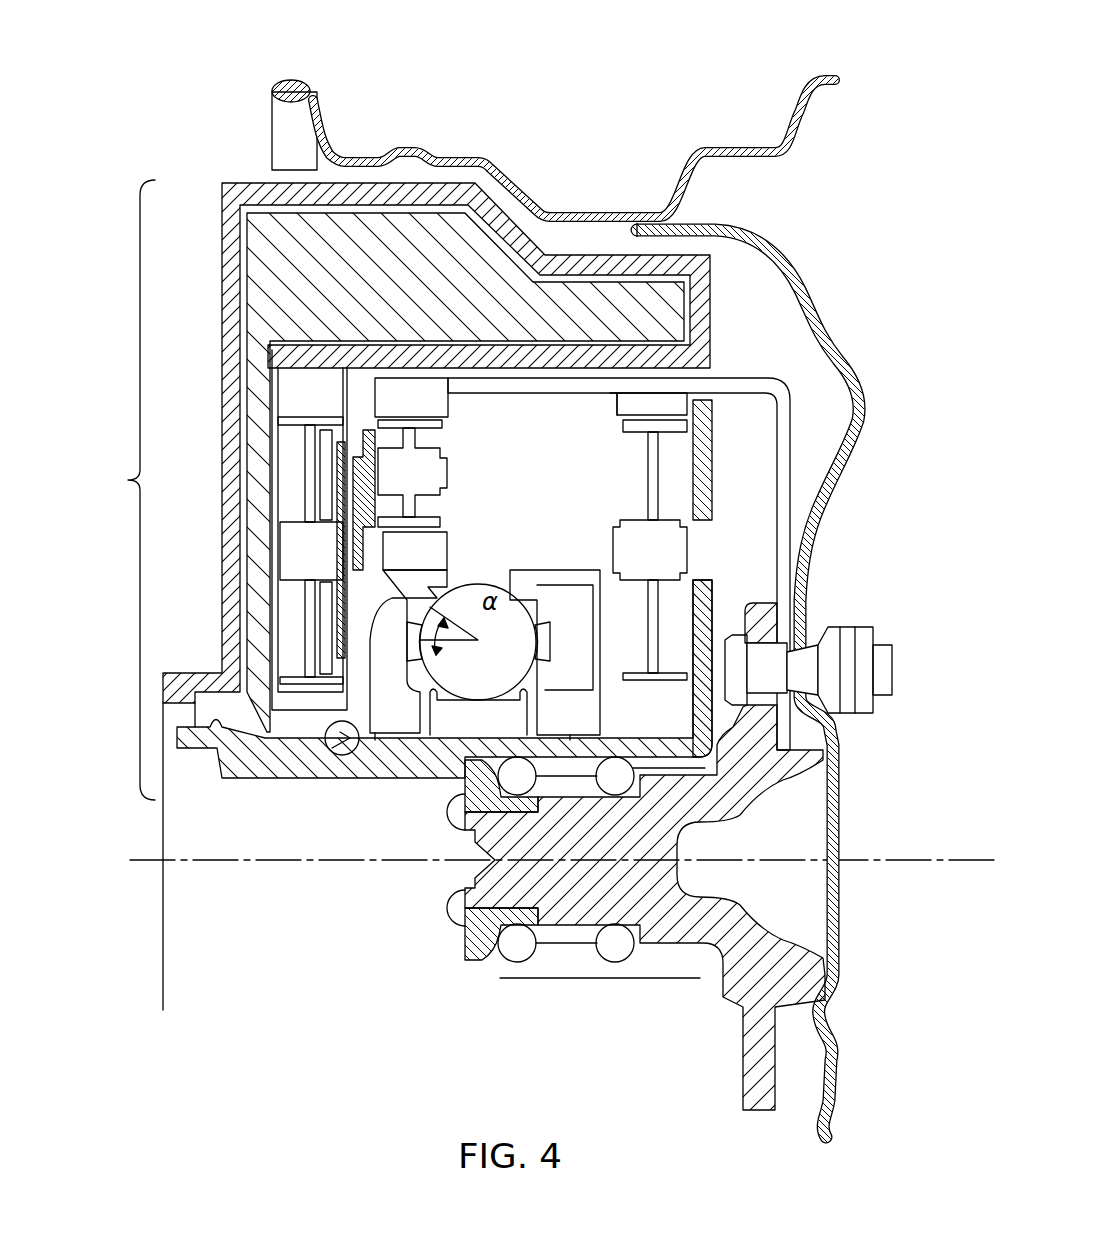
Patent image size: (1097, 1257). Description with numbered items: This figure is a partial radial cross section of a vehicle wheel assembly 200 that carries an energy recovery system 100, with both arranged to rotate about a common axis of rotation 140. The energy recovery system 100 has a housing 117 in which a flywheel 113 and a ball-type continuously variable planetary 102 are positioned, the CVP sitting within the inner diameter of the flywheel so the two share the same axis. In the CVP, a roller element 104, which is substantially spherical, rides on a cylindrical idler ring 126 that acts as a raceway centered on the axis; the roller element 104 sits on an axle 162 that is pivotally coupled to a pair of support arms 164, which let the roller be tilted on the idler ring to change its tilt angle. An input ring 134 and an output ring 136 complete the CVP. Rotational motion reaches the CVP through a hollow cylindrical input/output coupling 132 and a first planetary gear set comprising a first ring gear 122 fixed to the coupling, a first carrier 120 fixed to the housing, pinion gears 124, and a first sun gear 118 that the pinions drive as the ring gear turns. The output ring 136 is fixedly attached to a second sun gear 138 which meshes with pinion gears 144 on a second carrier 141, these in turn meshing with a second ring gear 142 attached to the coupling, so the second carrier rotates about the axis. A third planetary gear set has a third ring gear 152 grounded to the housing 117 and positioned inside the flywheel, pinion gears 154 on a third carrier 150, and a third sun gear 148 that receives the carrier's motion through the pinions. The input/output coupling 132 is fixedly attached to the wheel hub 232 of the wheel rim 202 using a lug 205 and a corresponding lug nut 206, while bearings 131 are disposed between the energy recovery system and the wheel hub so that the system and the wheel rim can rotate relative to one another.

The energy recovery system 100 is at (116, 490).
The ball-type continuously variable planetary 102 is at (362, 717).
The roller element 104 is at (522, 657).
The flywheel 113 is at (250, 278).
The housing 117 is at (222, 226).
The first sun gear 118 is at (658, 732).
The first carrier 120 is at (713, 523).
The first ring gear 122 is at (635, 415).
The pinion gears 124 is at (693, 461).
The idler ring 126 is at (447, 737).
The bearings 131 is at (517, 962).
The input/output coupling 132 is at (797, 432).
The input ring 134 is at (540, 570).
The output ring 136 is at (437, 585).
The second sun gear 138 is at (447, 542).
The axis of rotation 140 is at (318, 862).
The second carrier 141 is at (372, 432).
The second ring gear 142 is at (448, 396).
The pinion gears 144 is at (447, 424).
The third sun gear 148 is at (293, 710).
The third carrier 150 is at (330, 504).
The third ring gear 152 is at (312, 374).
The pinion gears 154 is at (300, 472).
The axle 162 is at (540, 640).
The support arms 164 is at (382, 735).
The wheel assembly 200 is at (762, 74).
The wheel rim 202 is at (803, 112).
The lug 205 is at (808, 644).
The lug nut 206 is at (870, 634).
The wheel hub 232 is at (752, 812).